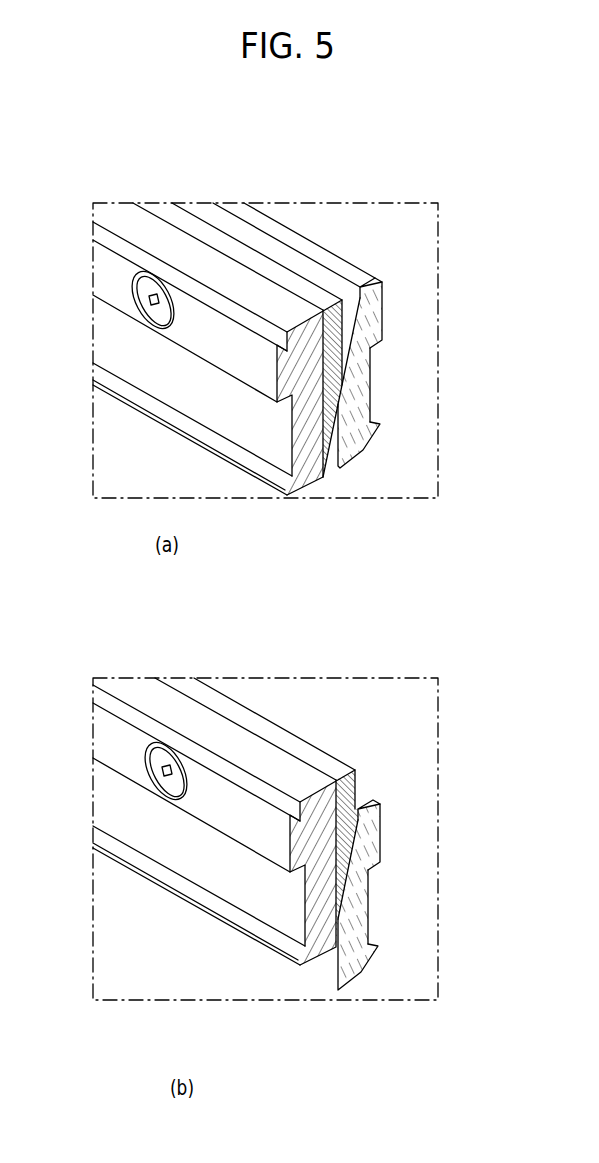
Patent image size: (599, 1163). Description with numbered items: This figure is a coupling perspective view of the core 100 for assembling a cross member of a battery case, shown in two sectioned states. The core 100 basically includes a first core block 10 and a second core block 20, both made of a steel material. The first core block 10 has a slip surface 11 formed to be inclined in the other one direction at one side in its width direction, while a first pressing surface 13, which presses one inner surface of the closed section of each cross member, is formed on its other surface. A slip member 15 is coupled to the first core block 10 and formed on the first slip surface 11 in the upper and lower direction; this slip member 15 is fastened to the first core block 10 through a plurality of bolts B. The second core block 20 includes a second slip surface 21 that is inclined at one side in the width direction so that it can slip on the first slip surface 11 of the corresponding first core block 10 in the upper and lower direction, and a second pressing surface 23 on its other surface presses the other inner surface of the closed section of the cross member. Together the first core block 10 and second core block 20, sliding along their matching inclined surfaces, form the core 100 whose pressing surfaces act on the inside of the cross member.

The core 100 is at (294, 154).
The first core block 10 is at (314, 489).
The slip surface 11 is at (372, 422).
The first pressing surface 13 is at (195, 330).
The slip member 15 is at (358, 318).
The second core block 20 is at (367, 468).
The second slip surface 21 is at (358, 296).
The second pressing surface 23 is at (376, 299).
The bolts B is at (145, 286).